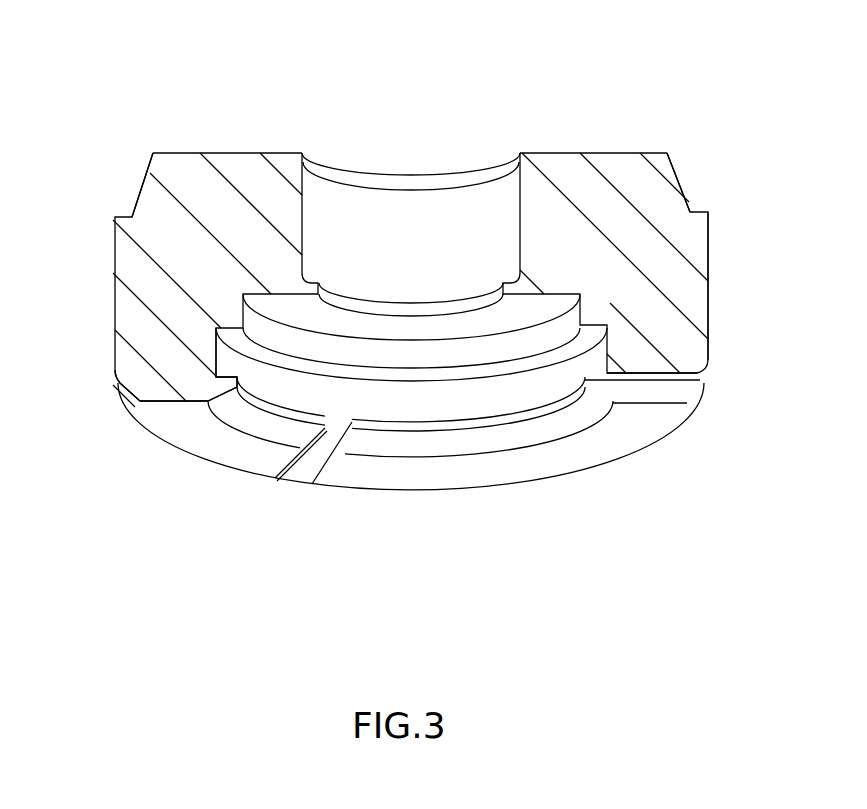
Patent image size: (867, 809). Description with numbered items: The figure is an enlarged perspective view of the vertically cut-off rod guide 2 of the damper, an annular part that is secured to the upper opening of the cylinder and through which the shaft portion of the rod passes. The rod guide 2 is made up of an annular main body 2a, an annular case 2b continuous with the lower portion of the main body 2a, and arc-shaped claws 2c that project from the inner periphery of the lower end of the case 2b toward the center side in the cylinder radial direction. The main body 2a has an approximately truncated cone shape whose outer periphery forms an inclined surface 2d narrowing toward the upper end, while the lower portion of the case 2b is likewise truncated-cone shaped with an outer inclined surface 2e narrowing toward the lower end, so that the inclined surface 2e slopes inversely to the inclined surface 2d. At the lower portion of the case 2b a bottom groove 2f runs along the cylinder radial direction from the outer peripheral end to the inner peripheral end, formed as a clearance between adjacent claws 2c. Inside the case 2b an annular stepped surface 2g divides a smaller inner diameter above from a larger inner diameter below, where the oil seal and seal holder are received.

The rod guide 2 is at (636, 136).
The main body 2a is at (668, 183).
The case 2b is at (695, 358).
The claw 2c is at (262, 424).
The inclined surface 2d is at (138, 190).
The inclined surface 2e is at (130, 402).
The bottom groove 2f is at (323, 457).
The stepped surface 2g is at (222, 337).